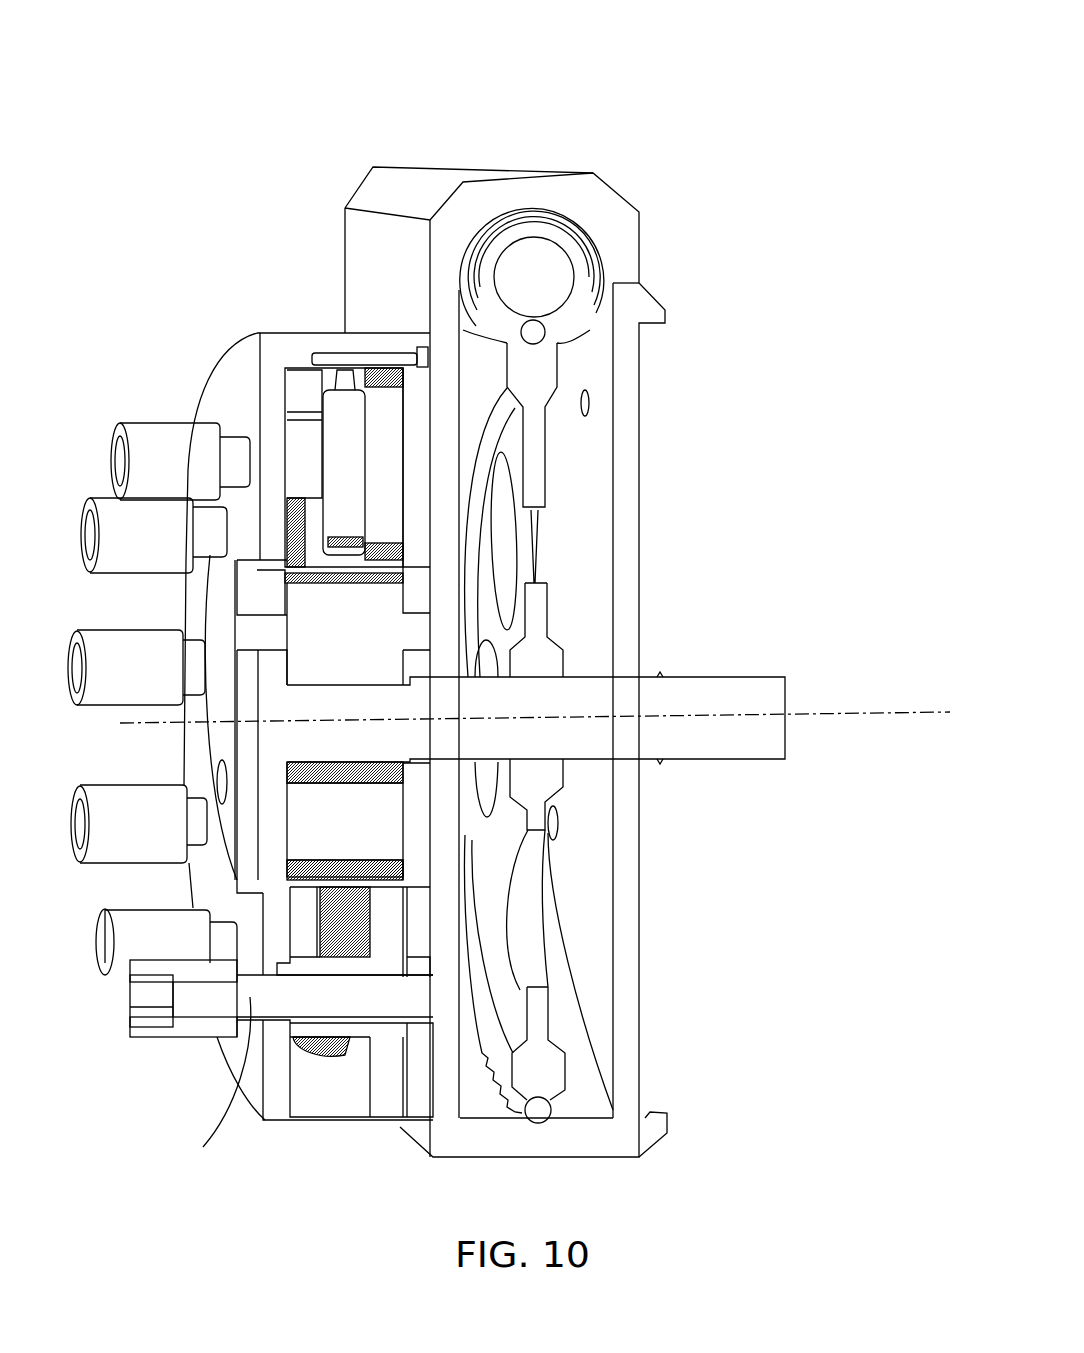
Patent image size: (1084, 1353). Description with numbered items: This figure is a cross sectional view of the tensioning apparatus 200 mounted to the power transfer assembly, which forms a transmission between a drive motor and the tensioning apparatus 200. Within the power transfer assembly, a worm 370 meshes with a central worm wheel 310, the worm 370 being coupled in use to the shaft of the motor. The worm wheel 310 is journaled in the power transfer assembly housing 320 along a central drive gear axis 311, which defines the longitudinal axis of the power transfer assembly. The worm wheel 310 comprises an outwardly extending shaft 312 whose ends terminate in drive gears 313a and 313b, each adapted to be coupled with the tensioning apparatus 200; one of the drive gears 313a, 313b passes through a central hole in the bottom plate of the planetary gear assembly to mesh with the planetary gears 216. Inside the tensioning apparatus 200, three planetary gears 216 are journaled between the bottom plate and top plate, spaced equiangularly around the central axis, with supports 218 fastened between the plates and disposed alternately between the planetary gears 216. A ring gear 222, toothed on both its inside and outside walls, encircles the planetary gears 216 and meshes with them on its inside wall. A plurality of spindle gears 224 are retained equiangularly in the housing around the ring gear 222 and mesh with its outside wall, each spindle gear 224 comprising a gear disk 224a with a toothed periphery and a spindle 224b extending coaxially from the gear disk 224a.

The tensioning apparatus 200 is at (190, 362).
The planetary gears 216 is at (155, 1030).
The supports 218 is at (345, 821).
The ring gear 222 is at (330, 573).
The spindle gears 224 is at (318, 1015).
The gear disk 224a is at (388, 1090).
The spindle 224b is at (255, 1028).
The worm wheel 310 is at (638, 180).
The central drive gear axis 311 is at (832, 706).
The shaft 312 is at (600, 738).
The drive gear 313a is at (325, 708).
The drive gear 313b is at (735, 682).
The power transfer assembly housing 320 is at (433, 318).
The worm 370 is at (548, 275).